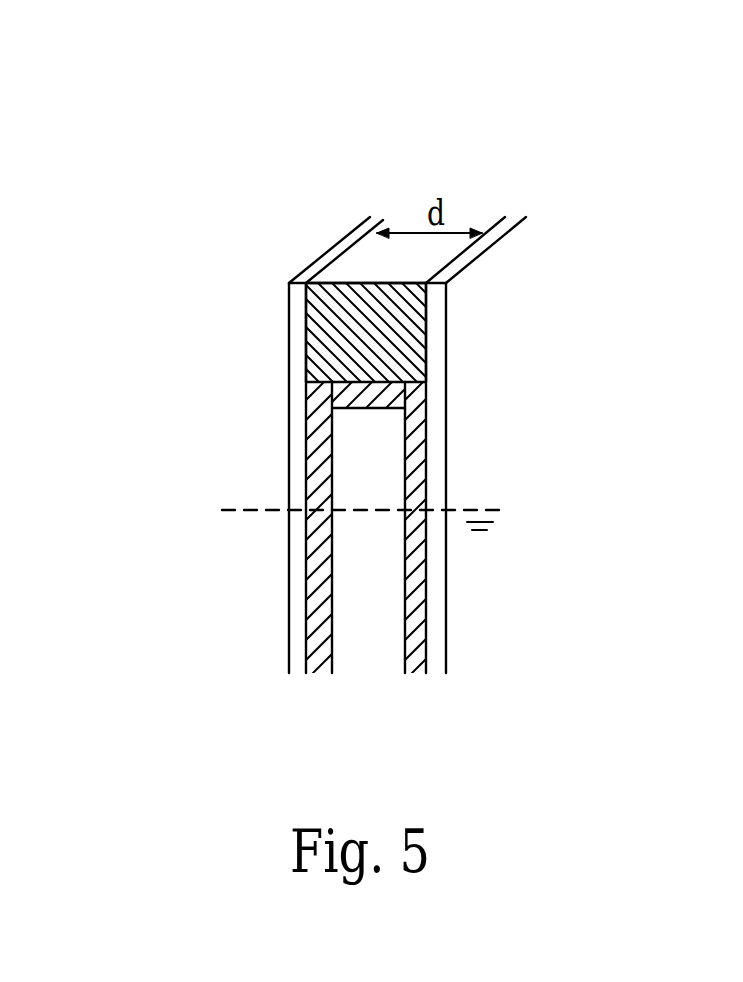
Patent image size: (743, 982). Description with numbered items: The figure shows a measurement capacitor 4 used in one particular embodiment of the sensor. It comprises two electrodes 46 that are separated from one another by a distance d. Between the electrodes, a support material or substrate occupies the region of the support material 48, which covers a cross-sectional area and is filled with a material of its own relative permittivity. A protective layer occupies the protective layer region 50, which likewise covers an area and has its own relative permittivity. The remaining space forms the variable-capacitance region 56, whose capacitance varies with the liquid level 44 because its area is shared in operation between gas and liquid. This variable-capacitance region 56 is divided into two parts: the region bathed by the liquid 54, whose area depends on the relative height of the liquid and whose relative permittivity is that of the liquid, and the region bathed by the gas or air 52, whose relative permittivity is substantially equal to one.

The measurement capacitor 4 is at (508, 162).
The liquid level 44 is at (223, 510).
The electrodes 46 is at (297, 330).
The region of the support material 48 is at (345, 313).
The protective layer region 50 is at (342, 392).
The region bathed by the gas or air 52 is at (382, 485).
The region bathed by the liquid 54 is at (382, 568).
The variable-capacitance region 56 is at (592, 395).